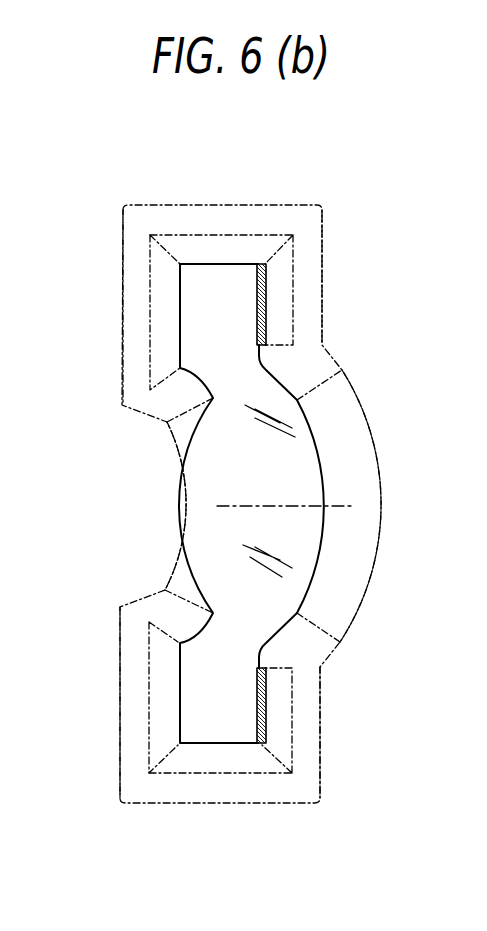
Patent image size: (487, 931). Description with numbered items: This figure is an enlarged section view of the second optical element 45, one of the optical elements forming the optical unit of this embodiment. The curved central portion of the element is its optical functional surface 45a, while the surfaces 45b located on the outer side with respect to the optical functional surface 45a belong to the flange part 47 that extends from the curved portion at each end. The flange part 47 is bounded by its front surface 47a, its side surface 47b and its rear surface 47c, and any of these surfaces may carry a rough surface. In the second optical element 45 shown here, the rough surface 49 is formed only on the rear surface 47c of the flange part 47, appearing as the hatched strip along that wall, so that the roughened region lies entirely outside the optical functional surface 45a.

The second optical element 45 is at (104, 215).
The optical functional surface 45a is at (188, 515).
The outer surface 45b is at (226, 205).
The flange part 47 is at (190, 277).
The front surface of flange part 47a is at (150, 308).
The side surface of flange part 47b is at (267, 235).
The rear surface of flange part 47c is at (293, 277).
The rough surface 49 is at (266, 318).